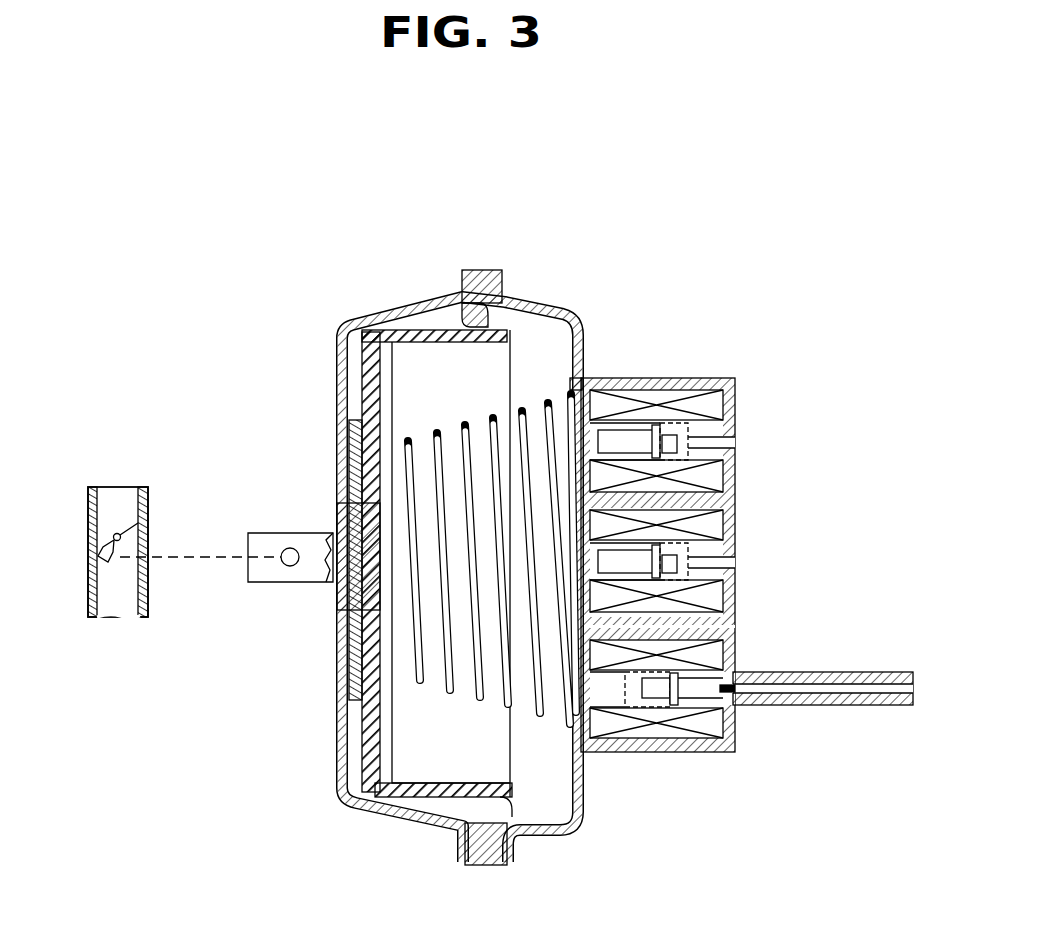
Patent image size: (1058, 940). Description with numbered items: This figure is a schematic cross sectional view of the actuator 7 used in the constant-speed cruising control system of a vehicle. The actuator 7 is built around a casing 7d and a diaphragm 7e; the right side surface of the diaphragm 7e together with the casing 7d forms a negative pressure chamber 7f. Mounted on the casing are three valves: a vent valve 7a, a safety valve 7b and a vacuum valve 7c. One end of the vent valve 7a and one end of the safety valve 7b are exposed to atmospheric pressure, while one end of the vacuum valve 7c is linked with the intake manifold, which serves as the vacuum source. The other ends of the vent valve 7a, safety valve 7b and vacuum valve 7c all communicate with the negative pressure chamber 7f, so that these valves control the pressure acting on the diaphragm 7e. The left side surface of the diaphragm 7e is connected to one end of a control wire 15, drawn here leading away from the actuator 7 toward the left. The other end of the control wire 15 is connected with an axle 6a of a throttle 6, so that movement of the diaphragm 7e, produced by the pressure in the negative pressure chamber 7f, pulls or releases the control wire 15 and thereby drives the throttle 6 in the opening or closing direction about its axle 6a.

The throttle 6 is at (92, 512).
The axle of the throttle 6a is at (118, 533).
The actuator 7 is at (580, 504).
The vent valve 7a is at (690, 445).
The safety valve 7b is at (712, 566).
The vacuum valve 7c is at (704, 688).
The casing 7d is at (528, 288).
The diaphragm 7e is at (432, 334).
The negative pressure chamber 7f is at (530, 364).
The control wire 15 is at (195, 556).